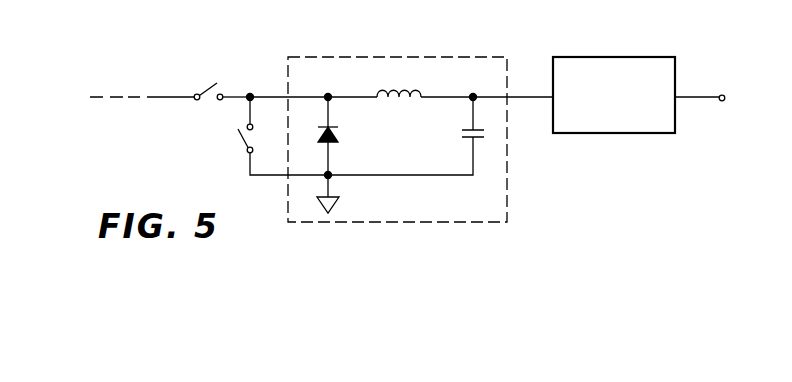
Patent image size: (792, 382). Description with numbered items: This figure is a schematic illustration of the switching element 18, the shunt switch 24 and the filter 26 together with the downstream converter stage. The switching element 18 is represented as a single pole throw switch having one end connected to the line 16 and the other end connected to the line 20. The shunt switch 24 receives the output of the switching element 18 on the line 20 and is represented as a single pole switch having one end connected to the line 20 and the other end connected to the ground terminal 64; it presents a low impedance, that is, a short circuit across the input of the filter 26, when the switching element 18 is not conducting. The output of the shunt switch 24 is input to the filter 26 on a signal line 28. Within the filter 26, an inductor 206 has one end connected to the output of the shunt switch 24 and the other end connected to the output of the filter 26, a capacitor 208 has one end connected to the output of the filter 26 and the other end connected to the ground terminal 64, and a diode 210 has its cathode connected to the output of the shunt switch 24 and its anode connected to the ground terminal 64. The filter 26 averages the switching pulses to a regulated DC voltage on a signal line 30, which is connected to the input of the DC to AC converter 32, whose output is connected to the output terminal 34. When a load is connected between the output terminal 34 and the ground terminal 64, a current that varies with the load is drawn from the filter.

The line 16 is at (157, 93).
The switching element 18 is at (207, 86).
The line 20 is at (237, 94).
The shunt switch 24 is at (240, 144).
The filter 26 is at (386, 52).
The signal line 28 is at (268, 94).
The signal line 30 is at (523, 95).
The DC to AC converter 32 is at (610, 55).
The output terminal 34 is at (720, 95).
The ground terminal 64 is at (331, 178).
The inductor 206 is at (405, 90).
The capacitor 208 is at (468, 140).
The diode 210 is at (341, 135).